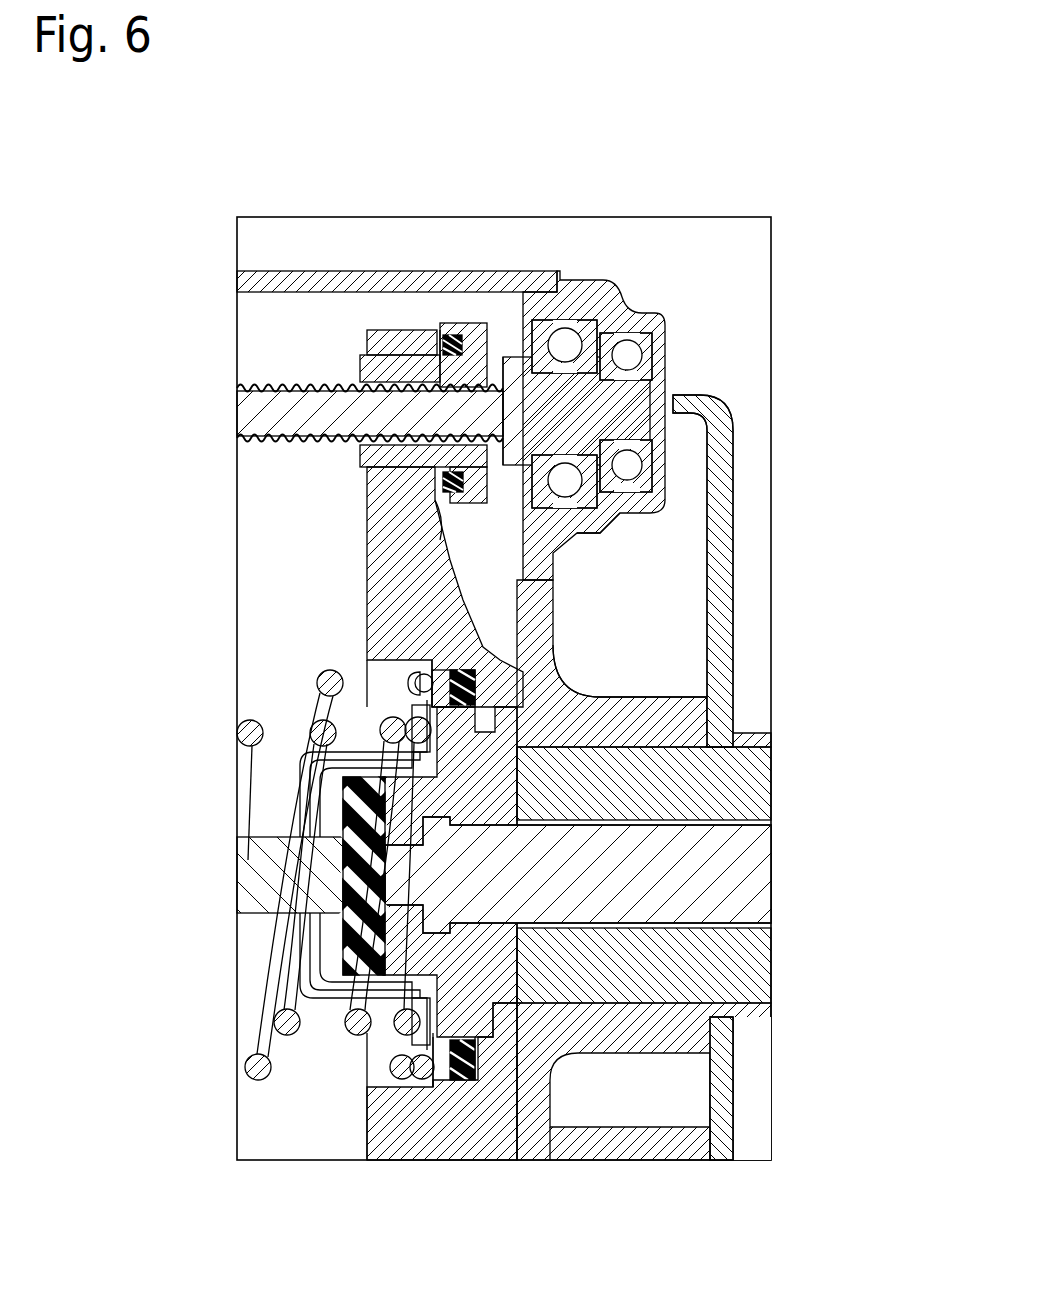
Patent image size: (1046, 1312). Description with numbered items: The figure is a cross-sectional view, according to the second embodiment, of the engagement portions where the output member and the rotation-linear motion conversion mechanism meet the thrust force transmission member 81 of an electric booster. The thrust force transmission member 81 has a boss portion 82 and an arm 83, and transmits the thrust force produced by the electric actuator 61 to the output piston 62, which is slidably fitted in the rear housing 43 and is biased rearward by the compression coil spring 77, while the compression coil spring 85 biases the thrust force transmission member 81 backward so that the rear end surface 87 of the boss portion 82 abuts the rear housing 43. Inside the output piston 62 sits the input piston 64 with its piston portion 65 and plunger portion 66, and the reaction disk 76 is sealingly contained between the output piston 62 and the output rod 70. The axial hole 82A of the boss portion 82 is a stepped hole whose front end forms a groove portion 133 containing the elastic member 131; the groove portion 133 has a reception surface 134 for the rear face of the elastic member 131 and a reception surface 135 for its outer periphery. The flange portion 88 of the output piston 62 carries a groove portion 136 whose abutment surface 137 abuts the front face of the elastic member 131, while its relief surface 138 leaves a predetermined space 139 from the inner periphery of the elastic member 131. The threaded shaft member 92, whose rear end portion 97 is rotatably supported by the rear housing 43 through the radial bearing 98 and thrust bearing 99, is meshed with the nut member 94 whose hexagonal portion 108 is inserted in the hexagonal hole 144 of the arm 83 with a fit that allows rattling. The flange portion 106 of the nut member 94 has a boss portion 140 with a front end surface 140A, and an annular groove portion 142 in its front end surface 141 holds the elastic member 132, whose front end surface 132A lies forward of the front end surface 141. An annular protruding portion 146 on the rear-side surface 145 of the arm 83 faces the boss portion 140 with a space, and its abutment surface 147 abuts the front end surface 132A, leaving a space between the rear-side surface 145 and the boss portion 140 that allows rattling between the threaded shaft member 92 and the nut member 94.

The rear housing 43 is at (375, 266).
The electric actuator 61 is at (530, 300).
The output piston 62 is at (645, 1005).
The input piston 64 is at (775, 835).
The piston portion 65 is at (398, 878).
The plunger portion 66 is at (750, 890).
The output rod 70 is at (234, 883).
The reaction disk 76 is at (338, 958).
The compression coil spring 77 is at (242, 730).
The thrust force transmission member 81 is at (364, 1140).
The boss portion 82 is at (555, 677).
The axial hole 82A is at (505, 727).
The arm 83 is at (470, 596).
The compression coil spring 85 is at (322, 675).
The rear end surface 87 is at (525, 707).
The flange portion 88 is at (430, 1088).
The threaded shaft member 92 is at (265, 412).
The nut member 94 is at (492, 298).
The rear end portion 97 is at (632, 395).
The radial bearing 98 is at (648, 340).
The thrust bearing 99 is at (627, 355).
The flange portion 106 is at (567, 335).
The hexagonal portion 108 is at (400, 458).
The elastic member 131 is at (465, 1082).
The elastic member 132 is at (613, 515).
The front end surface 132A is at (448, 336).
The groove portion 133 is at (458, 668).
The reception surface 134 is at (482, 1082).
The reception surface 135 is at (456, 1082).
The groove portion 136 is at (412, 680).
The abutment surface 137 is at (408, 1068).
The relief surface 138 is at (418, 762).
The space 139 is at (320, 757).
The boss portion 140 is at (440, 480).
The front end surface 140A is at (362, 375).
The front end surface 141 is at (470, 320).
The annular groove portion 142 is at (470, 495).
The hexagonal hole 144 is at (400, 357).
The rear-side surface 145 is at (445, 520).
The annular protruding portion 146 is at (440, 340).
The abutment surface 147 is at (450, 486).